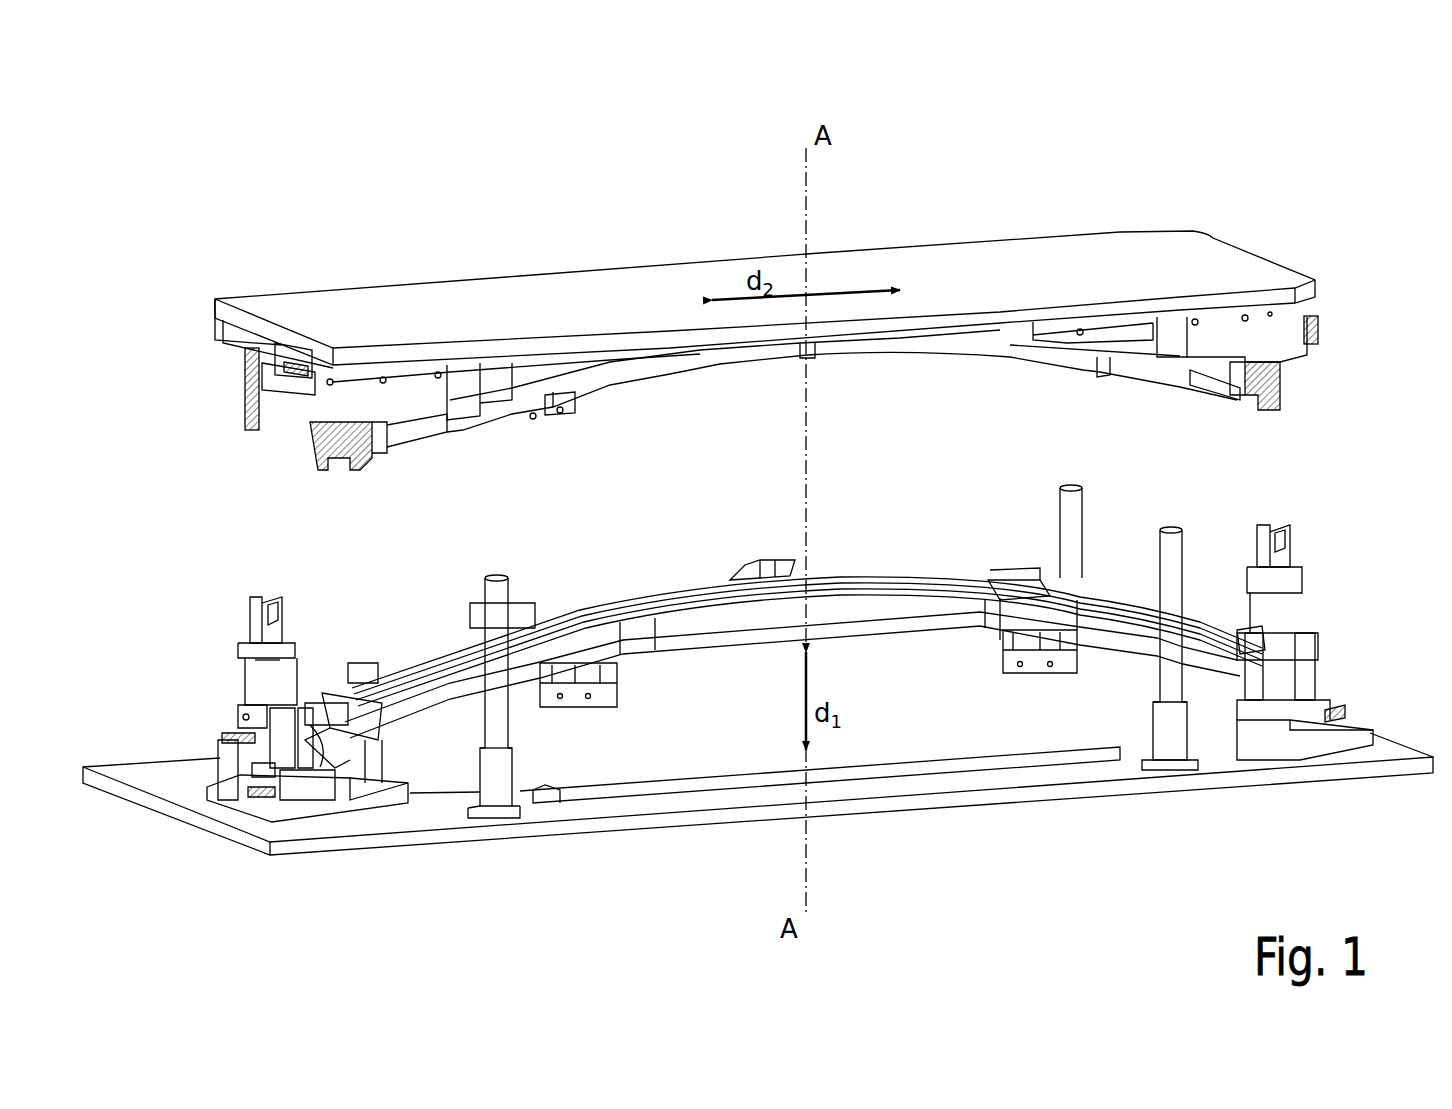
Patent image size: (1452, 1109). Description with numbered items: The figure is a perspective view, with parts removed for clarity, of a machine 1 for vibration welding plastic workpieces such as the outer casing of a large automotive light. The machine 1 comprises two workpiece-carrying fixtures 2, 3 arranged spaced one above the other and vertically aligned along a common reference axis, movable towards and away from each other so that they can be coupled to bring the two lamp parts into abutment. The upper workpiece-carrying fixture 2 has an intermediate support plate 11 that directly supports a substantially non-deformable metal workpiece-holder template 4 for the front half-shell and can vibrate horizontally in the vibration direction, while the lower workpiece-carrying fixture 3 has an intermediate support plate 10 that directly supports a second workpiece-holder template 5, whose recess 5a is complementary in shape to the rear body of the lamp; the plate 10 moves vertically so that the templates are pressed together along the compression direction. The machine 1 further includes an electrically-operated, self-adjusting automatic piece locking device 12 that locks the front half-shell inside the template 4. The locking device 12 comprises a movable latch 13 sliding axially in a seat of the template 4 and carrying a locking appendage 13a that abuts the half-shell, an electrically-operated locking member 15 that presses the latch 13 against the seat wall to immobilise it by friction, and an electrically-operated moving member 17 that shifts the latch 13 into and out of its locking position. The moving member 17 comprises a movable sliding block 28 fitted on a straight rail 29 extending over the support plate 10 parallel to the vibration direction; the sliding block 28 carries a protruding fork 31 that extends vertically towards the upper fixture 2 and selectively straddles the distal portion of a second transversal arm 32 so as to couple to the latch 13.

The machine for welding workpieces made of plastic materials 1 is at (305, 242).
The workpiece-carrying fixture 2 is at (588, 288).
The workpiece-carrying fixture 3 is at (878, 814).
The workpiece-holder template 4 is at (640, 368).
The workpiece-holder template 5 is at (590, 760).
The recess 5a is at (587, 608).
The intermediate support plate 10 is at (325, 846).
The intermediate support plate 11 is at (453, 304).
The automatic piece locking device 12 is at (247, 398).
The movable latch 13 is at (345, 408).
The locking appendage 13a is at (374, 462).
The electrically-operated locking member 15 is at (250, 340).
The electrically-operated moving member 17 is at (235, 697).
The movable sliding block 28 is at (243, 678).
The straight rail 29 is at (235, 745).
The protruding fork 31 is at (258, 608).
The second transversal arm 32 is at (252, 383).